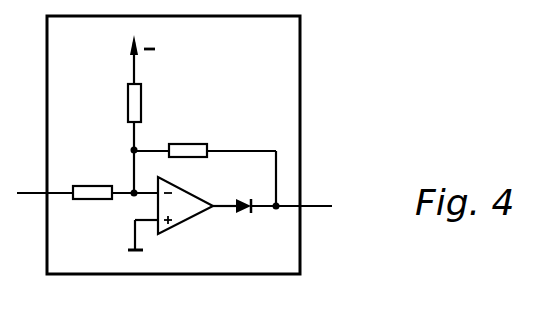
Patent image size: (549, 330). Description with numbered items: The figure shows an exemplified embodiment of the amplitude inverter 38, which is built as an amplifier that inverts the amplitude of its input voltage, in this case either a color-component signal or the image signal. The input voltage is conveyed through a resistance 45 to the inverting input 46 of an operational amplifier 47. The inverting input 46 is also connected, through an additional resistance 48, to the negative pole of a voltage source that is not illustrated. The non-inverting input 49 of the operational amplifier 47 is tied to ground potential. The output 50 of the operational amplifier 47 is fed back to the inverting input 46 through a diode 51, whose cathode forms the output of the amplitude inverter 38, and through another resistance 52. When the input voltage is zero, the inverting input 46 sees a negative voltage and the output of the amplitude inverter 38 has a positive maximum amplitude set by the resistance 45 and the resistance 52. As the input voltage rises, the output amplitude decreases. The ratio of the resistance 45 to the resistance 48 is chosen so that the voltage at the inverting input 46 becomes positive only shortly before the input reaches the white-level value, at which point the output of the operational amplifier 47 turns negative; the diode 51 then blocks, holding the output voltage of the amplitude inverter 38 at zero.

The amplitude inverter 38 is at (112, 264).
The resistance 45 is at (89, 194).
The inverting input 46 is at (156, 196).
The operational amplifier 47 is at (183, 212).
The additional resistance 48 is at (137, 112).
The non-inverting input 49 is at (157, 226).
The output 50 is at (218, 209).
The diode 51 is at (243, 202).
The another resistance 52 is at (185, 152).